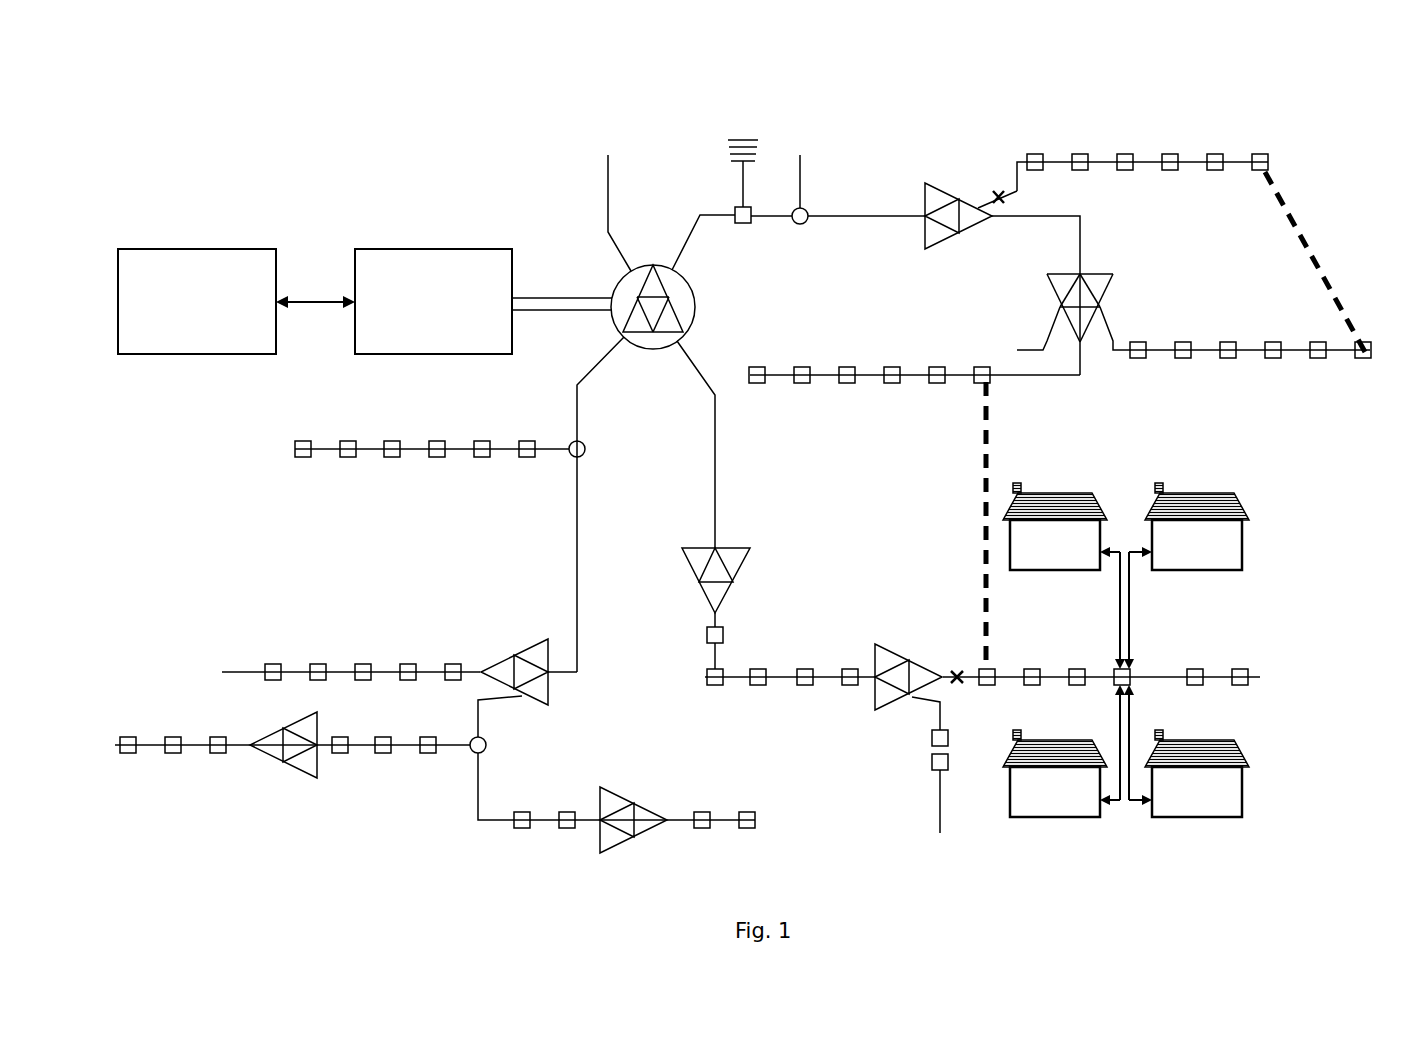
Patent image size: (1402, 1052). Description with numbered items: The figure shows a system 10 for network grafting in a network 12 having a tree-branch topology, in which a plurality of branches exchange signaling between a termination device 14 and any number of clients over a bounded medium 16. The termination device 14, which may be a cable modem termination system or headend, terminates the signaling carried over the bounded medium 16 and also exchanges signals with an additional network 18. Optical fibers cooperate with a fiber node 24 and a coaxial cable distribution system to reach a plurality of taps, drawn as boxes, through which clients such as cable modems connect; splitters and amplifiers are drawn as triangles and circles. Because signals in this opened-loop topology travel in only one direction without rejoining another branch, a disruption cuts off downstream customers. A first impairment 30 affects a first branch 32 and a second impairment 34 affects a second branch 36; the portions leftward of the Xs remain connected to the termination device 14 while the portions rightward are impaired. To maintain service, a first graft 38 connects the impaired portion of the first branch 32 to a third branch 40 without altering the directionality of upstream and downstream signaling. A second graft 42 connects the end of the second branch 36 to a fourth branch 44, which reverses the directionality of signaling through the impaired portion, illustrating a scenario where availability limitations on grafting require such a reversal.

The system 10 is at (1090, 73).
The network 12 is at (466, 204).
The termination device 14 is at (383, 249).
The bounded medium 16 is at (808, 302).
The additional network 18 is at (170, 249).
The fiber node 24 is at (697, 308).
The first impairment 30 is at (955, 655).
The first branch 32 is at (1260, 660).
The second impairment 34 is at (988, 185).
The second branch 36 is at (1243, 142).
The first graft 38 is at (978, 583).
The third branch 40 is at (868, 355).
The second graft 42 is at (1285, 208).
The fourth branch 44 is at (1236, 334).